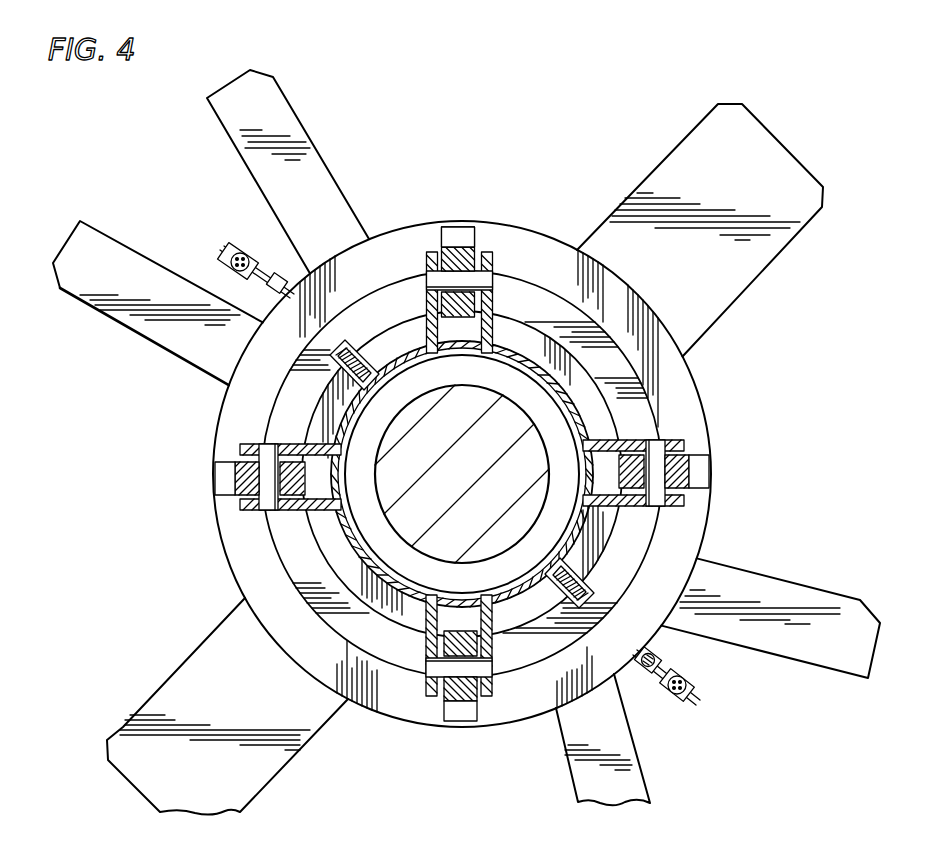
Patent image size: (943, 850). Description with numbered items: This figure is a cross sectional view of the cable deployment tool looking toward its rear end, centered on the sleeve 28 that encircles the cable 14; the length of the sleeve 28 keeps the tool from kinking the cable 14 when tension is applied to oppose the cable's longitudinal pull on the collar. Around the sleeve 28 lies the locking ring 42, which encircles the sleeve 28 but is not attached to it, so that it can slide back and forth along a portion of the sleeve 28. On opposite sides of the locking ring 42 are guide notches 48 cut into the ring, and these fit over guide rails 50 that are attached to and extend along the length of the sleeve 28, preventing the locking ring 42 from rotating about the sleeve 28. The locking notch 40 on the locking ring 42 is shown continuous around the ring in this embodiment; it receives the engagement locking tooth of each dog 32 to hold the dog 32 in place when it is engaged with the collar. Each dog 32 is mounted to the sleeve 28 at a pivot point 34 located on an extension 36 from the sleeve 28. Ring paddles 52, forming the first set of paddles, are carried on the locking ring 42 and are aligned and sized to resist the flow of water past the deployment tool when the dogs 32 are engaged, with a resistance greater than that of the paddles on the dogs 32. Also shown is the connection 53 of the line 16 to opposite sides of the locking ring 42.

The cable 14 is at (503, 417).
The line 16 is at (243, 252).
The sleeve 28 is at (405, 352).
The dog 32 is at (459, 226).
The pivot point 34 is at (497, 300).
The extension 36 is at (436, 252).
The locking notch 40 is at (633, 385).
The locking ring 42 is at (578, 245).
The guide notches 48 is at (340, 362).
The guide rails 50 is at (346, 366).
The ring paddles 52 is at (250, 70).
The connection 53 is at (228, 257).